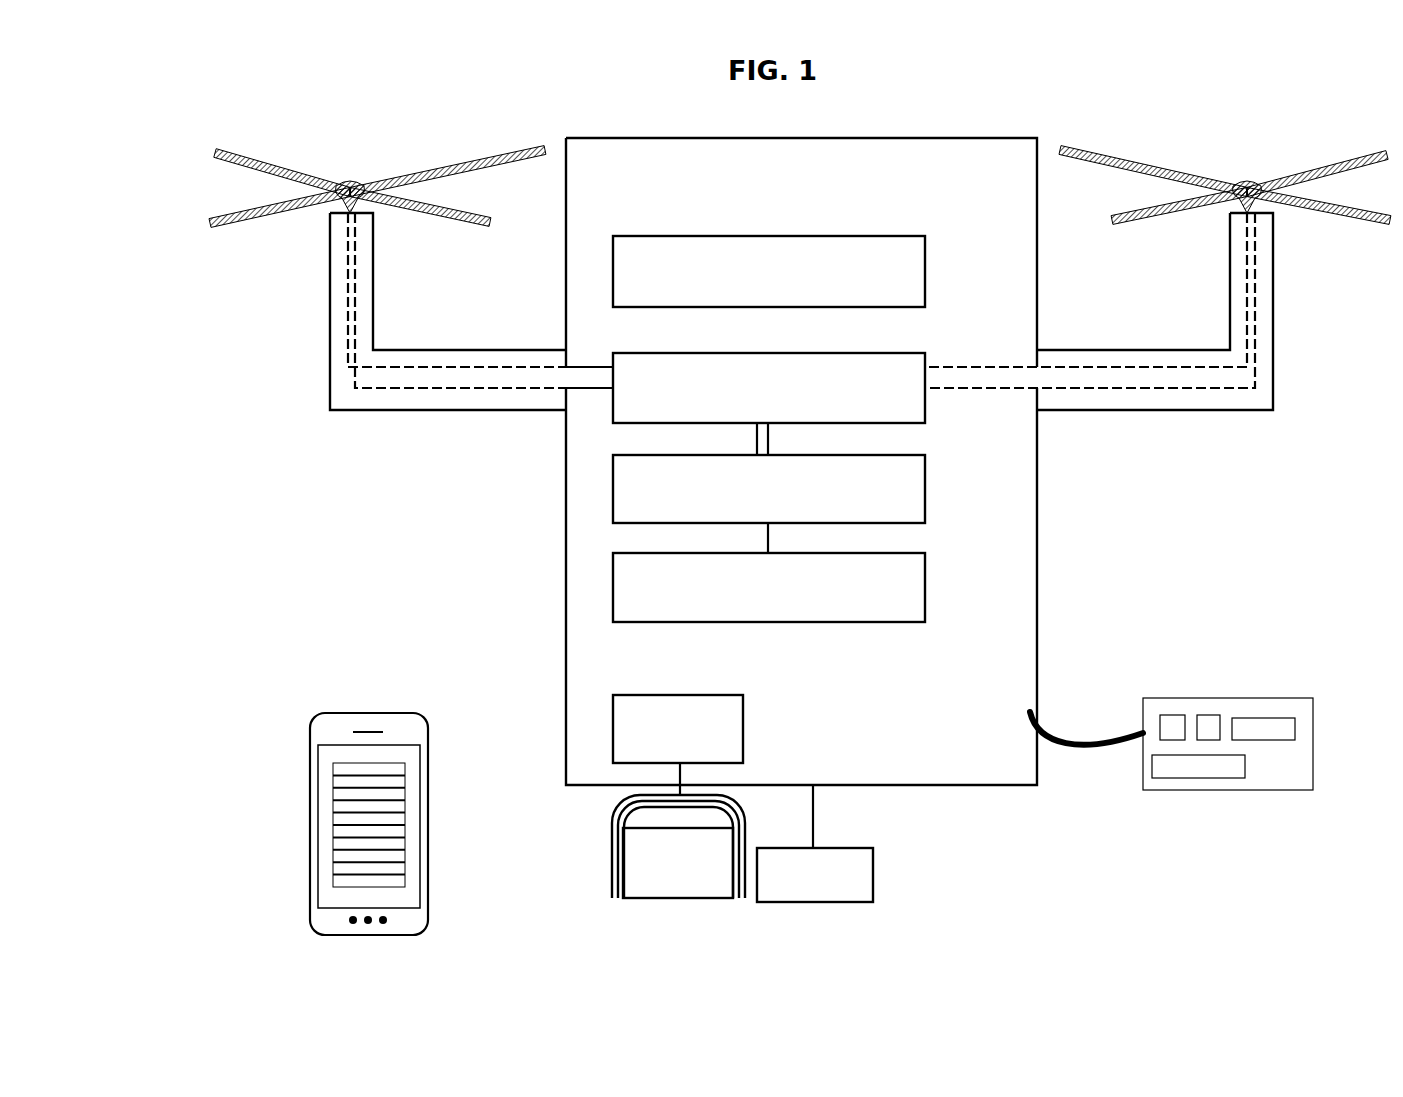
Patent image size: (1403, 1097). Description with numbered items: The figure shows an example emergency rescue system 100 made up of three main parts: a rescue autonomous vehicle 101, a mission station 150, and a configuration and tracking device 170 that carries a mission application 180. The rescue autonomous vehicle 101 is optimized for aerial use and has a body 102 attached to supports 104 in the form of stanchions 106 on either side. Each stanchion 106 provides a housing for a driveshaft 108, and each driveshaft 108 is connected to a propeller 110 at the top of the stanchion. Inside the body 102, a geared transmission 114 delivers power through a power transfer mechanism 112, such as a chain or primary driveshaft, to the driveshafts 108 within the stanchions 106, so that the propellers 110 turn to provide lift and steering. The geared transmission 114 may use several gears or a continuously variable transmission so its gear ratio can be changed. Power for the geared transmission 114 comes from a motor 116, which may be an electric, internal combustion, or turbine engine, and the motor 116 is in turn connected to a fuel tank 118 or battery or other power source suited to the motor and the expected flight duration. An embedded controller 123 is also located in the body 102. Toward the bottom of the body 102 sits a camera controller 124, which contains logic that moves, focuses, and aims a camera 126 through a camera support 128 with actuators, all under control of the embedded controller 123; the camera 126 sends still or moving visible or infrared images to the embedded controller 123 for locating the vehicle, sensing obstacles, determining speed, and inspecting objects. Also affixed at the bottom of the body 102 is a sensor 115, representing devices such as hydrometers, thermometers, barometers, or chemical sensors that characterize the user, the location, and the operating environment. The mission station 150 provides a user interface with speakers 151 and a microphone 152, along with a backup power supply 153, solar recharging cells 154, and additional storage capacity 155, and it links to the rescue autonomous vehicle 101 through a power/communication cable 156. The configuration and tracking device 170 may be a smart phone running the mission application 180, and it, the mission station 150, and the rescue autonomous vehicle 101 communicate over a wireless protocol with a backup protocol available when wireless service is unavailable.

The emergency rescue system 100 is at (1292, 126).
The rescue autonomous vehicle 101 is at (1008, 527).
The body 102 is at (830, 218).
The supports 104 is at (368, 412).
The stanchion 106 is at (332, 338).
The driveshaft 108 is at (347, 300).
The propeller 110 is at (210, 146).
The power transfer mechanism 112 is at (507, 394).
The geared transmission 114 is at (927, 403).
The sensors 115 is at (873, 870).
The motor 116 is at (927, 493).
The fuel tank 118 is at (927, 592).
The embedded controller 123 is at (927, 277).
The camera controller 124 is at (744, 730).
The camera 126 is at (675, 903).
The camera support 128 is at (612, 870).
The mission station 150 is at (1198, 692).
The speakers 151 is at (1167, 727).
The microphone 152 is at (1212, 728).
The backup power supply 153 is at (1180, 770).
The solar recharging cells 154 is at (1160, 698).
The additional storage capacity 155 is at (1250, 732).
The power/communication cable 156 is at (1080, 747).
The configuration and tracking device 170 is at (312, 774).
The mission application 180 is at (333, 858).